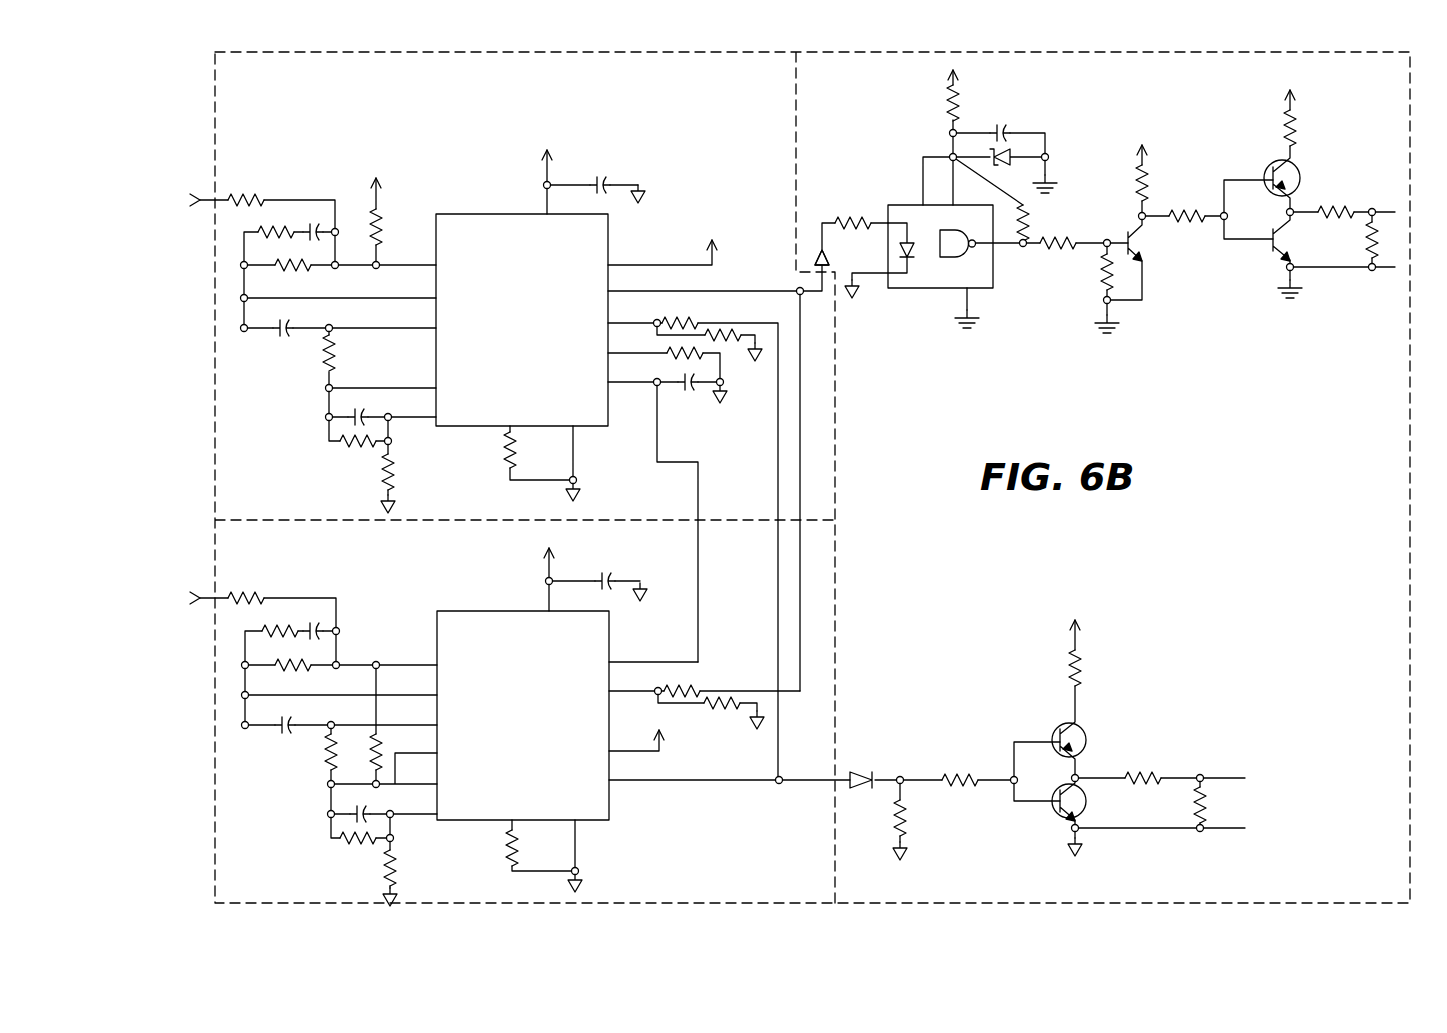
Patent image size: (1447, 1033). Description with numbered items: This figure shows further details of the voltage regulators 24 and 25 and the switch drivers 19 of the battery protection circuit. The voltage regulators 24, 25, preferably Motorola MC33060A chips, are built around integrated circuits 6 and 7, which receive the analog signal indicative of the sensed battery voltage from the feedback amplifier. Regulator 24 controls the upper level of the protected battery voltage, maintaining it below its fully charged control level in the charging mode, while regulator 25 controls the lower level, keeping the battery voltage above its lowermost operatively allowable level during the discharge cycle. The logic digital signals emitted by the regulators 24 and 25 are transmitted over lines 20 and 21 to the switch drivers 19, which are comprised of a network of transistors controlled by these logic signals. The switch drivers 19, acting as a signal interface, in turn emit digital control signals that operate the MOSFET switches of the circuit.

The integrated circuit 6 is at (524, 323).
The integrated circuit 7 is at (525, 718).
The switch drivers 19 is at (1411, 638).
The line 20 is at (818, 254).
The line 21 is at (822, 786).
The voltage regulator 24 is at (215, 110).
The voltage regulator 25 is at (215, 837).